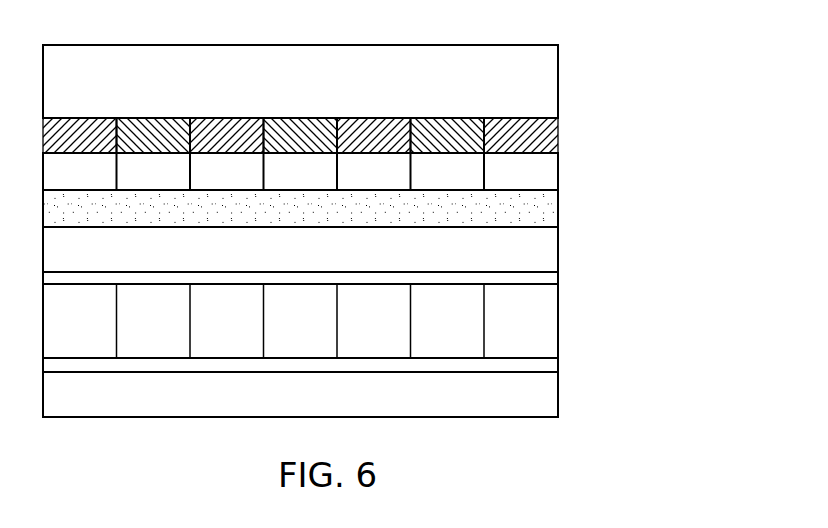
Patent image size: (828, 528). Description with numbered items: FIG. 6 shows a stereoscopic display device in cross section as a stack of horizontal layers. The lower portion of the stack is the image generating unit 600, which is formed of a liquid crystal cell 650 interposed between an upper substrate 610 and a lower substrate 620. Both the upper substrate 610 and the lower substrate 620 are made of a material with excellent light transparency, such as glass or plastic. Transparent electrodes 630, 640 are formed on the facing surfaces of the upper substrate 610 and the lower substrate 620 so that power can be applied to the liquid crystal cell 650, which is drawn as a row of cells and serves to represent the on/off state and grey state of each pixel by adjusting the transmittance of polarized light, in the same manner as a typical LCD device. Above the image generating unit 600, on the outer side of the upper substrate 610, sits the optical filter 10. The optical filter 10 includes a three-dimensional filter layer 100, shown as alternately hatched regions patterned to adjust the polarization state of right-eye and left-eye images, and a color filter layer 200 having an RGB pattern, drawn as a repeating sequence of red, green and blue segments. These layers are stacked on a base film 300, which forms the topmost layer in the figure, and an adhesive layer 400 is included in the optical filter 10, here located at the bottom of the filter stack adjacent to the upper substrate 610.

The optical filter 10 is at (377, 134).
The base film 300 is at (552, 60).
The 3D filter layer 100 is at (552, 127).
The color filter layer 200 is at (552, 168).
The adhesive layer 400 is at (345, 208).
The image generating unit 600 is at (383, 328).
The upper substrate 610 is at (552, 253).
The transparent electrode 630 is at (552, 280).
The liquid crystal cell 650 is at (552, 325).
The transparent electrode 640 is at (552, 367).
The lower substrate 620 is at (345, 400).